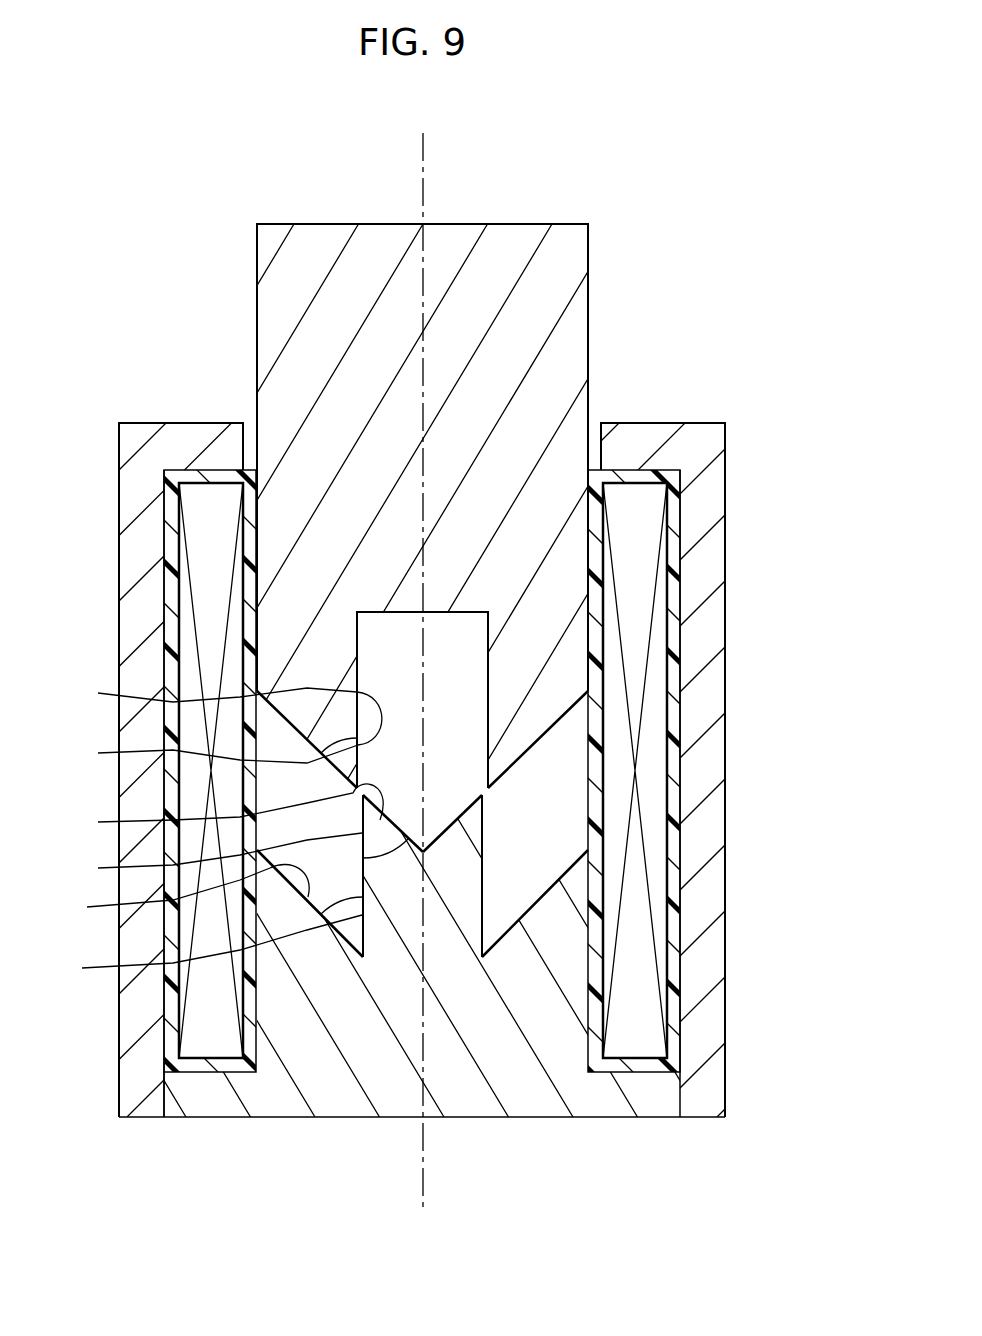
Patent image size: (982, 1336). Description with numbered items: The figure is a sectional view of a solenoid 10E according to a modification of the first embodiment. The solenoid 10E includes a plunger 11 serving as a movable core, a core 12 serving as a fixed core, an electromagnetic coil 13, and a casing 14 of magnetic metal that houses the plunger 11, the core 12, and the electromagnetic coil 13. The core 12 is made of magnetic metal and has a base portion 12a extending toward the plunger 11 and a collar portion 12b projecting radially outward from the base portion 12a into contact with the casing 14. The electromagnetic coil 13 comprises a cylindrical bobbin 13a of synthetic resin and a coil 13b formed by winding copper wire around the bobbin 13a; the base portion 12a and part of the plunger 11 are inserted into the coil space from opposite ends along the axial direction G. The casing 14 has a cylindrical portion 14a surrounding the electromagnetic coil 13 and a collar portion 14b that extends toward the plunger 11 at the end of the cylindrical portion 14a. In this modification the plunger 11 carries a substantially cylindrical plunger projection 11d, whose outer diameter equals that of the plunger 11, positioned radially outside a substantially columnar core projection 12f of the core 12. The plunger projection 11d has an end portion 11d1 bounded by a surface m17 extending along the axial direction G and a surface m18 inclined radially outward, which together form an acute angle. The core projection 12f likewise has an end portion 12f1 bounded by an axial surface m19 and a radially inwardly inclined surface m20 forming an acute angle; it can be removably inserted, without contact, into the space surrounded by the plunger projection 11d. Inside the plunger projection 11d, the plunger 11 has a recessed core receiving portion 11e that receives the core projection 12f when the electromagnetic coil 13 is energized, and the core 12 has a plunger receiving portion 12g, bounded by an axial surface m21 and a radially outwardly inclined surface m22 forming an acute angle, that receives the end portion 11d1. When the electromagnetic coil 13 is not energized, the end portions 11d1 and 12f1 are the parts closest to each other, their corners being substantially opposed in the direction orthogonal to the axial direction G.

The solenoid 10E is at (661, 132).
The plunger 11 is at (601, 308).
The plunger projection 11d is at (548, 683).
The end portion 11d1 is at (498, 758).
The core receiving portion 11e is at (458, 645).
The core 12 is at (585, 1130).
The base portion 12a is at (327, 1025).
The collar portion 12b is at (198, 1100).
The core projection 12f is at (442, 912).
The end portion 12f1 is at (480, 813).
The plunger receiving portion 12g is at (523, 858).
The electromagnetic coil 13 is at (491, 770).
The bobbin 13a is at (677, 998).
The coil 13b is at (640, 1013).
The casing 14 is at (491, 743).
The cylindrical portion 14a is at (702, 548).
The collar portion 14b is at (637, 443).
The axial direction G is at (423, 173).
The surface m17 is at (217, 712).
The surface m18 is at (205, 752).
The surface m19 is at (207, 859).
The surface m20 is at (218, 809).
The surface m21 is at (201, 950).
The surface m22 is at (174, 893).